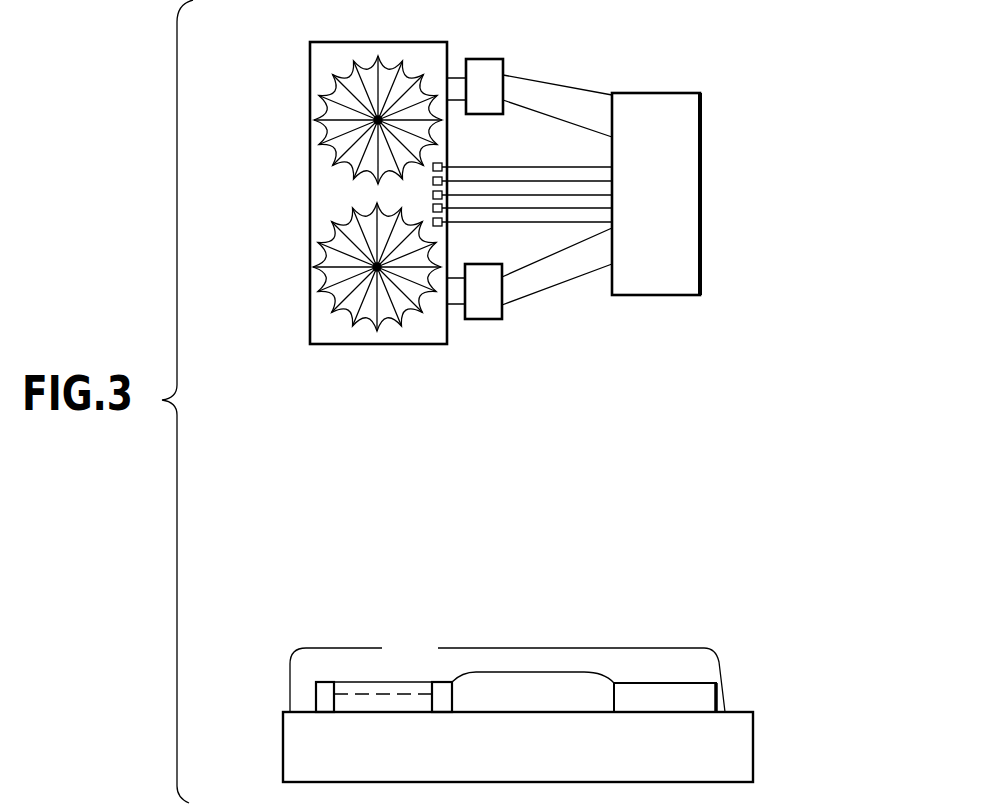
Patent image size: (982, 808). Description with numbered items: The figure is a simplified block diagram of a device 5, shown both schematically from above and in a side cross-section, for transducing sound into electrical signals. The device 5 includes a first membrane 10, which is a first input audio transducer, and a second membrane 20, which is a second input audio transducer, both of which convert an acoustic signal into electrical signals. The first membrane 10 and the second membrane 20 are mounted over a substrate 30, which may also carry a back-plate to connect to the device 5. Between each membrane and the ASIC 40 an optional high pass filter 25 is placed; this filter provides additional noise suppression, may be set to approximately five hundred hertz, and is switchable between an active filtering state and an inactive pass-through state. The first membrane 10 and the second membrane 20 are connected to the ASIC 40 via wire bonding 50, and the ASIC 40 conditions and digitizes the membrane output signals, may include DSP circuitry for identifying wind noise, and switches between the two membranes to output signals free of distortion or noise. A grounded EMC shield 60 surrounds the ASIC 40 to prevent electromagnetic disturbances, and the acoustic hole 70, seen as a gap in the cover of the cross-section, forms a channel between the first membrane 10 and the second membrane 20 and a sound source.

The device 5 is at (753, 73).
The first membrane 10 is at (350, 102).
The second membrane 20 is at (347, 282).
The high pass filter 25 is at (480, 59).
The substrate 30 is at (330, 332).
The ASIC 40 is at (700, 223).
The wire bonding 50 is at (578, 222).
The grounded EMC shield 60 is at (727, 690).
The acoustic hole 70 is at (408, 651).